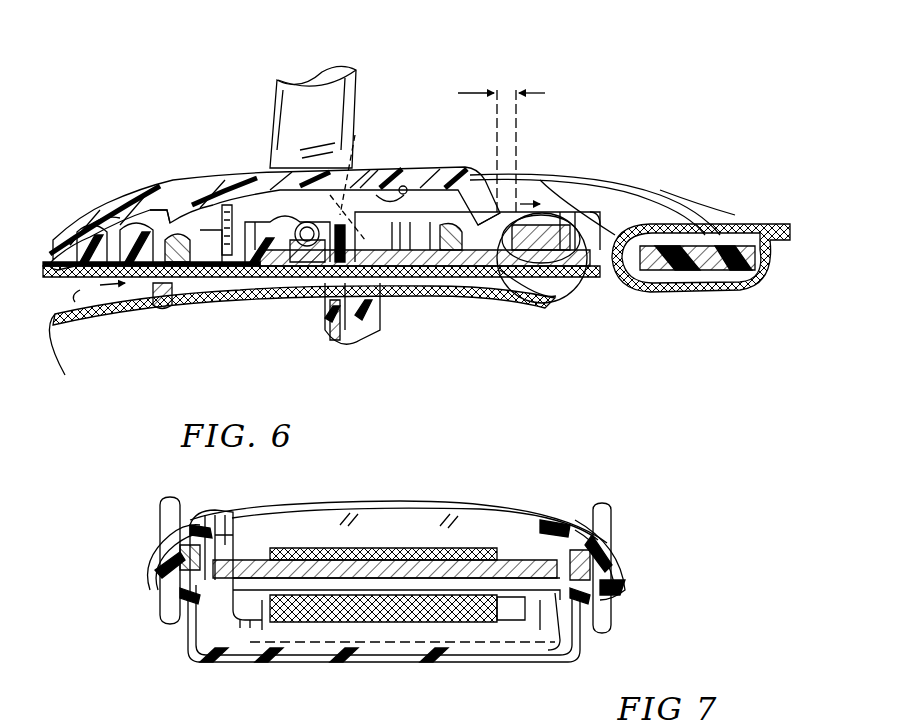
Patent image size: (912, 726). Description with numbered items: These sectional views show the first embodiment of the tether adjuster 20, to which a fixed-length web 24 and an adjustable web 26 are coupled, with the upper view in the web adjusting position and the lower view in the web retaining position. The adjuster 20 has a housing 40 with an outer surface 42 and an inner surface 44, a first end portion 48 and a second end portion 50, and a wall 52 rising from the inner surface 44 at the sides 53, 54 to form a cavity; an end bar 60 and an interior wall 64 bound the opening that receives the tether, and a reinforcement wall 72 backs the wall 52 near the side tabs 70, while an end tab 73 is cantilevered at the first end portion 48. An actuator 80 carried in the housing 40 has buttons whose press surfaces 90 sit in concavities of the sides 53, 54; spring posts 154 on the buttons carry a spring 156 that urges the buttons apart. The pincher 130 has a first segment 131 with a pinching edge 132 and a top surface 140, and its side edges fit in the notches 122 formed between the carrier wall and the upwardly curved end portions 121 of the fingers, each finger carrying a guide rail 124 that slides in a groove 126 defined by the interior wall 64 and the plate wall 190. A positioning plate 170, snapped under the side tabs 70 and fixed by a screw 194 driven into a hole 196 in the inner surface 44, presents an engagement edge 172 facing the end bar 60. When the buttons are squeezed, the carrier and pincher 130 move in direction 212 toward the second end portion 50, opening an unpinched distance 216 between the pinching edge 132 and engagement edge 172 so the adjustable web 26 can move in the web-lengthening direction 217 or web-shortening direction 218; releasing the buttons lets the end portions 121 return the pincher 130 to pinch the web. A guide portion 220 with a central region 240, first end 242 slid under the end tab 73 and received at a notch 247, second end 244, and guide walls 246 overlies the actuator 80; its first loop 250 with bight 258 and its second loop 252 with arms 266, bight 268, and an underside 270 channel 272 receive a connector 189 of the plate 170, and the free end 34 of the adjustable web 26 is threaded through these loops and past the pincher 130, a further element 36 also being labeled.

In FIG. 6, the adjuster 20 is at (104, 148).
In FIG. 7, the adjuster 20 is at (158, 654).
In FIG. 6, the fixed-length web 24 is at (700, 300).
In FIG. 6, the adjustable web 26 is at (548, 316).
In FIG. 7, the adjustable web 26 is at (325, 548).
In FIG. 6, the free end 34 is at (58, 330).
In FIG. 6, the flexible wall 36 is at (100, 330).
In FIG. 6, the housing 40 is at (396, 160).
In FIG. 7, the housing 40 is at (225, 512).
In FIG. 6, the outer surface 42 is at (165, 185).
In FIG. 7, the outer surface 42 is at (412, 500).
In FIG. 6, the inner surface 44 is at (407, 195).
In FIG. 6, the first end portion 48 is at (58, 244).
In FIG. 6, the second end portion 50 is at (666, 192).
In FIG. 7, the wall 52 is at (190, 558).
In FIG. 7, the side 53 is at (615, 572).
In FIG. 7, the side 54 is at (160, 582).
In FIG. 6, the end bar 60 is at (700, 235).
In FIG. 7, the interior wall 64 is at (235, 540).
In FIG. 7, the side tab 70 is at (195, 590).
In FIG. 7, the reinforcement wall 72 is at (165, 558).
In FIG. 6, the end tab 73 is at (92, 218).
In FIG. 7, the actuator 80 is at (522, 560).
In FIG. 6, the press surface 90 is at (358, 171).
In FIG. 7, the press surface 90 is at (170, 612).
In FIG. 6, the upwardly curved end portion 121 is at (392, 225).
In FIG. 6, the notch 122 is at (578, 302).
In FIG. 7, the guide rail 124 is at (190, 530).
In FIG. 7, the groove 126 is at (205, 510).
In FIG. 6, the pincher 130 is at (565, 220).
In FIG. 7, the pincher 130 is at (505, 560).
In FIG. 6, the first segment 131 is at (512, 225).
In FIG. 6, the pinching edge 132 is at (470, 205).
In FIG. 6, the top surface 140 is at (558, 232).
In FIG. 6, the spring post 154 is at (300, 226).
In FIG. 6, the spring 156 is at (305, 225).
In FIG. 6, the positioning plate 170 is at (656, 272).
In FIG. 7, the positioning plate 170 is at (566, 622).
In FIG. 6, the engagement edge 172 is at (528, 303).
In FIG. 6, the connector 189 is at (372, 330).
In FIG. 7, the connector 189 is at (262, 628).
In FIG. 7, the wall 190 is at (200, 565).
In FIG. 6, the screw 194 is at (226, 200).
In FIG. 6, the hole 196 is at (218, 212).
In FIG. 6, the direction 212 is at (542, 232).
In FIG. 6, the unpinched distance 216 is at (482, 147).
In FIG. 6, the web-lengthening direction 217 is at (588, 268).
In FIG. 6, the web-shortening direction 218 is at (578, 290).
In FIG. 6, the guide portion 220 is at (225, 333).
In FIG. 6, the central region 240 is at (190, 240).
In FIG. 6, the first end 242 is at (99, 291).
In FIG. 6, the second end 244 is at (372, 360).
In FIG. 6, the guide wall 246 is at (262, 295).
In FIG. 6, the notch 247 is at (110, 212).
In FIG. 6, the first loop 250 is at (145, 303).
In FIG. 7, the first loop 250 is at (522, 618).
In FIG. 6, the second loop 252 is at (332, 360).
In FIG. 7, the second loop 252 is at (335, 665).
In FIG. 6, the bight 258 is at (158, 312).
In FIG. 7, the arms 266 is at (200, 652).
In FIG. 6, the bight 268 is at (358, 348).
In FIG. 7, the bight 268 is at (300, 665).
In FIG. 6, the underside 270 is at (372, 300).
In FIG. 6, the channel 272 is at (330, 322).